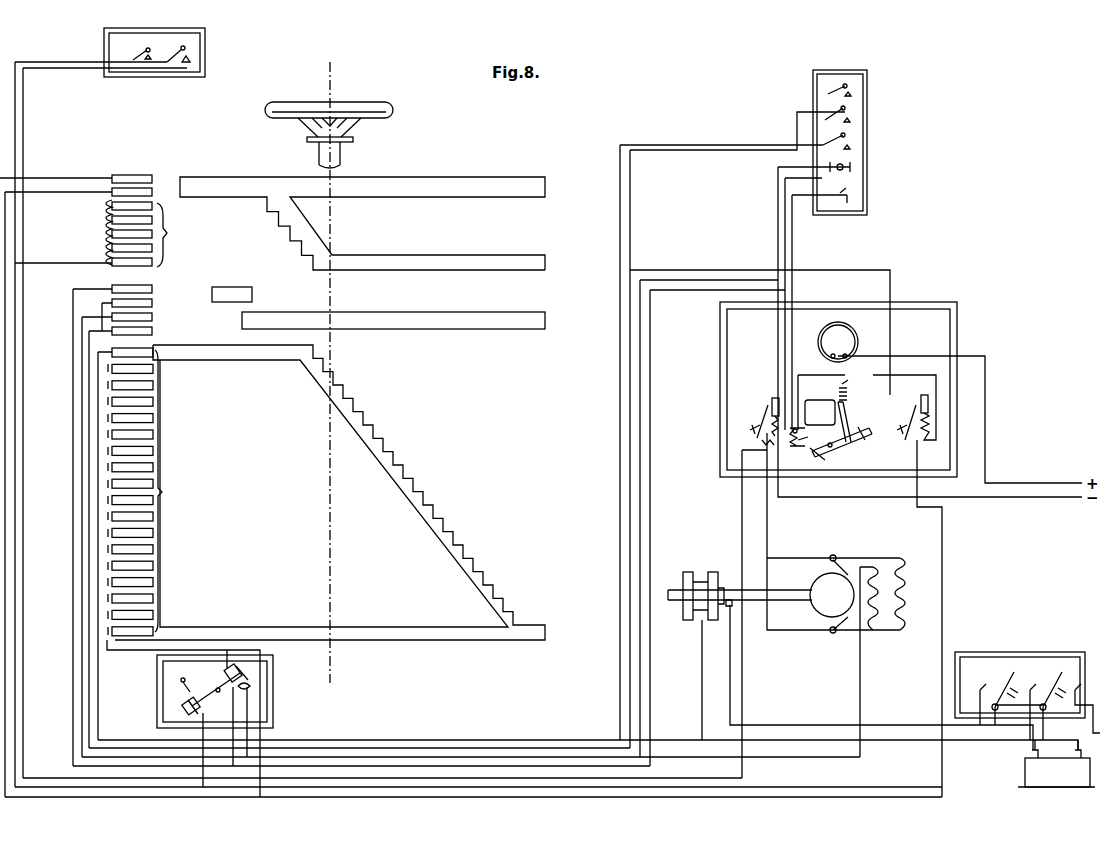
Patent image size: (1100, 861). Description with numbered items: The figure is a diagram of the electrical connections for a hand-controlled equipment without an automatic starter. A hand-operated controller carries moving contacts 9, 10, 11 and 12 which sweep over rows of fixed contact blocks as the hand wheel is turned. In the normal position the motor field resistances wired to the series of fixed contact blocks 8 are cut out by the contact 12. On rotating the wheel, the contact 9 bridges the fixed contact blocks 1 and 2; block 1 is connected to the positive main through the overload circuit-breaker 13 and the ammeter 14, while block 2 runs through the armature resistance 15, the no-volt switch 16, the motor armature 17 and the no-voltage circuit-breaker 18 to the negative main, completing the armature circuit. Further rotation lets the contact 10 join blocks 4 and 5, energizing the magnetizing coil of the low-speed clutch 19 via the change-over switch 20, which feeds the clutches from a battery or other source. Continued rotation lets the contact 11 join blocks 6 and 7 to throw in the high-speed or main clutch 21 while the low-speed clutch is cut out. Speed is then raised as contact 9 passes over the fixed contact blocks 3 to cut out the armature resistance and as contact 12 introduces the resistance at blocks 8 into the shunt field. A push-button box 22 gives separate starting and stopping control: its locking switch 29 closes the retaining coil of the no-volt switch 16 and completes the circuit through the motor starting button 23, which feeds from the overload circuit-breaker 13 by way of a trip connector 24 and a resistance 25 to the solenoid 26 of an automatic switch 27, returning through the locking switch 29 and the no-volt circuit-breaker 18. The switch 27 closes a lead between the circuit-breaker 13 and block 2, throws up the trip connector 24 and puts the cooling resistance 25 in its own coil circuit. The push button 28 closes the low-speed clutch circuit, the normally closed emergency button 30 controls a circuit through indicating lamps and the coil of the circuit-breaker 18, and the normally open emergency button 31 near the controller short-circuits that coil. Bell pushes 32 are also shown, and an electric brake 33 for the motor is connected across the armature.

The fixed contact block 1 is at (141, 177).
The fixed contact block 2 is at (141, 191).
The fixed contact blocks 3 is at (149, 234).
The fixed contact block 4 is at (152, 289).
The fixed contact block 5 is at (152, 303).
The fixed contact block 6 is at (152, 317).
The fixed contact block 7 is at (152, 331).
The series of fixed contact blocks 8 is at (144, 492).
The contact 9 is at (362, 223).
The contact 10 is at (232, 295).
The contact 11 is at (393, 321).
The contact 12 is at (330, 492).
The overload circuit-breaker 13 is at (924, 395).
The ammeter 14 is at (838, 389).
The armature resistance 15 is at (105, 224).
The no-volt switch 16 is at (222, 688).
The motor armature 17 is at (833, 533).
The no-voltage circuit-breaker 18 is at (774, 398).
The low-speed clutch 19 is at (712, 572).
The change-over switch 20 is at (1027, 719).
The high-speed or main clutch 21 is at (688, 572).
The push-button box 22 is at (813, 88).
The motor starting button 23 is at (851, 116).
The trip connector 24 is at (828, 421).
The resistance 25 is at (800, 443).
The solenoid 26 is at (843, 386).
The automatic switch 27 is at (841, 449).
The push button 28 is at (851, 143).
The locking switch 29 is at (852, 168).
The emergency button 30 is at (850, 196).
The emergency button 31 is at (186, 48).
The bell pushes 32 is at (148, 48).
The electric brake 33 is at (895, 657).